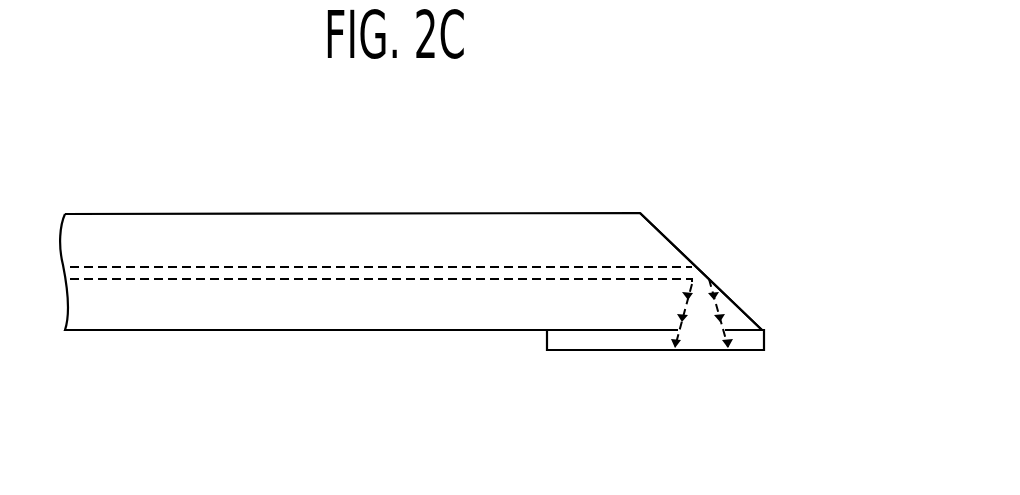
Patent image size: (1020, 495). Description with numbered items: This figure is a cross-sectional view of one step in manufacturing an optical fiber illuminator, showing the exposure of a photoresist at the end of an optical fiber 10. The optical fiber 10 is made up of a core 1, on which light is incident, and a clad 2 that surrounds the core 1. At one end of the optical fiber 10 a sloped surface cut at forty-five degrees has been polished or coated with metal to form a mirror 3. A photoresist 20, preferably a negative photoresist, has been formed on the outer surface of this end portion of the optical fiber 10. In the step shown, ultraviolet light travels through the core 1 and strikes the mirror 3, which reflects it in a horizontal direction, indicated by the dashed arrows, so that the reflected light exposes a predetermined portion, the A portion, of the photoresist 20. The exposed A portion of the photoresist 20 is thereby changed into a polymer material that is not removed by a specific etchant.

The optical fiber 10 is at (243, 152).
The core 1 is at (250, 272).
The clad 2 is at (302, 232).
The mirror 3 is at (678, 247).
The photoresist 20 is at (743, 342).
The A portion A is at (688, 362).